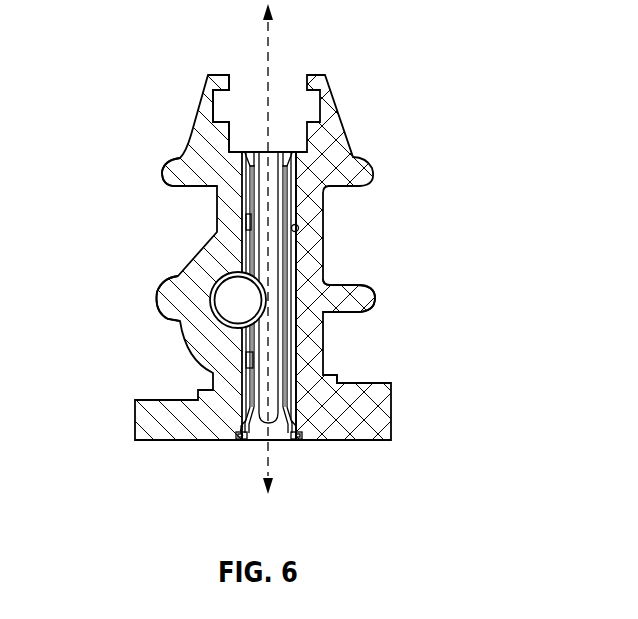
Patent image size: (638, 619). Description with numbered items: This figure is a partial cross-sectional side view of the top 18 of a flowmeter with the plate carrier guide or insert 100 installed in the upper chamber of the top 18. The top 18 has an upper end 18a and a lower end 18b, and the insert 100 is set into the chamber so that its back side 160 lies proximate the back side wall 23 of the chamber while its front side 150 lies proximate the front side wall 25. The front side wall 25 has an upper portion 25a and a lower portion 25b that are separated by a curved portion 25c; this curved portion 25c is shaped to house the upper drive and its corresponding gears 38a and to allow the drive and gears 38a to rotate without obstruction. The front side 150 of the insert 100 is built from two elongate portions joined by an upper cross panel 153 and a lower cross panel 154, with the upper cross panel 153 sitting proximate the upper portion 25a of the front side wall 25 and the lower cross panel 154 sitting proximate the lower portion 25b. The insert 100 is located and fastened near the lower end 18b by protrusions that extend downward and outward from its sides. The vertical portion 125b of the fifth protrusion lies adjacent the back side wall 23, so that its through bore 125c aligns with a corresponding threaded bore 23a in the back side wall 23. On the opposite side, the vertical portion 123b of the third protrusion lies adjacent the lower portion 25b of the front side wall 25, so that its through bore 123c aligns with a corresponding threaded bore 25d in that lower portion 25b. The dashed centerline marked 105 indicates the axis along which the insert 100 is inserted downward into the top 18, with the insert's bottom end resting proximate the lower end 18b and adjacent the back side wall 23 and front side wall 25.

The top 18 is at (356, 86).
The upper end 18a is at (228, 76).
The lower end 18b is at (376, 441).
The longitudinal axis 105 is at (269, 33).
The plate carrier guide or insert 100 is at (262, 132).
The front side wall 25 is at (257, 200).
The upper portion 25a is at (297, 157).
The lower portion 25b is at (208, 372).
The curved portion 25c is at (180, 323).
The threaded bore 25d is at (250, 438).
The back side wall 23 is at (298, 231).
The threaded bore 23a is at (298, 441).
The vertical portion 123b is at (244, 437).
The through bore 123c is at (241, 444).
The vertical portion 125b is at (303, 432).
The through bore 125c is at (291, 444).
The front side 150 is at (166, 170).
The upper cross panel 153 is at (232, 224).
The lower cross panel 154 is at (253, 358).
The back side 160 is at (309, 270).
The gears 38a is at (242, 361).